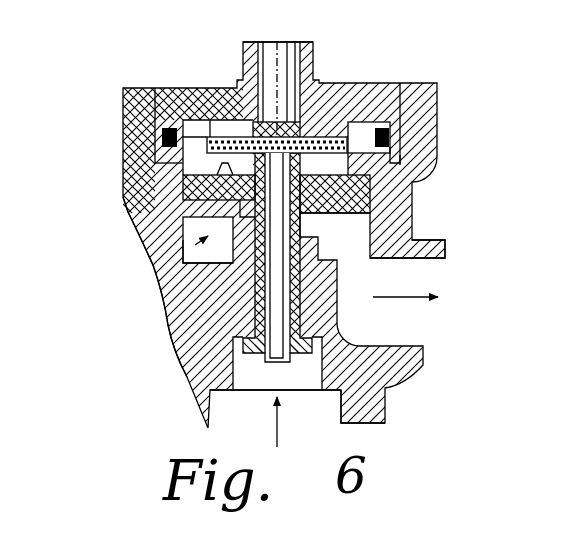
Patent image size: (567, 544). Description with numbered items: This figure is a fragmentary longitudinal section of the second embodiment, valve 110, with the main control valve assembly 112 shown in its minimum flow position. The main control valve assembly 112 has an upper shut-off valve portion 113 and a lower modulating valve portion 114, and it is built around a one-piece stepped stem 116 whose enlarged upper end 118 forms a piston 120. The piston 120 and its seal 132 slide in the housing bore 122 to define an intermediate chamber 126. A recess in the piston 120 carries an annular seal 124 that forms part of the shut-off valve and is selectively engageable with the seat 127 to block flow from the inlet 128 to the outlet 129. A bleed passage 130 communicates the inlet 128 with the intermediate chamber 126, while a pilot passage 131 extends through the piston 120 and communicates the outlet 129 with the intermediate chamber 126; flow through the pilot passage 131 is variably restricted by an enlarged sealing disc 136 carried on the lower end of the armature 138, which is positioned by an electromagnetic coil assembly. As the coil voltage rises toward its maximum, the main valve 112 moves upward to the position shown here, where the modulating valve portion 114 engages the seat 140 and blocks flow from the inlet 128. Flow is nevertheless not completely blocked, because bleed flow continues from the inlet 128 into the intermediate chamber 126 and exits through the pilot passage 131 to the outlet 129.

The valve 110 is at (455, 97).
The main control valve assembly 112 is at (148, 258).
The upper shut-off valve portion 113 is at (183, 236).
The lower modulating valve portion 114 is at (248, 362).
The one-piece stepped stem 116 is at (307, 233).
The enlarged upper end 118 is at (170, 150).
The piston 120 is at (230, 160).
The housing bore 122 is at (412, 222).
The annular seal 124 is at (190, 200).
The intermediate chamber 126 is at (357, 137).
The seat 127 is at (185, 262).
The inlet 128 is at (275, 362).
The outlet 129 is at (400, 311).
The bleed passage 130 is at (123, 93).
The pilot passage 131 is at (392, 163).
The seal 132 is at (413, 192).
The enlarged sealing disc 136 is at (237, 133).
The armature 138 is at (258, 46).
The seat 140 is at (337, 323).